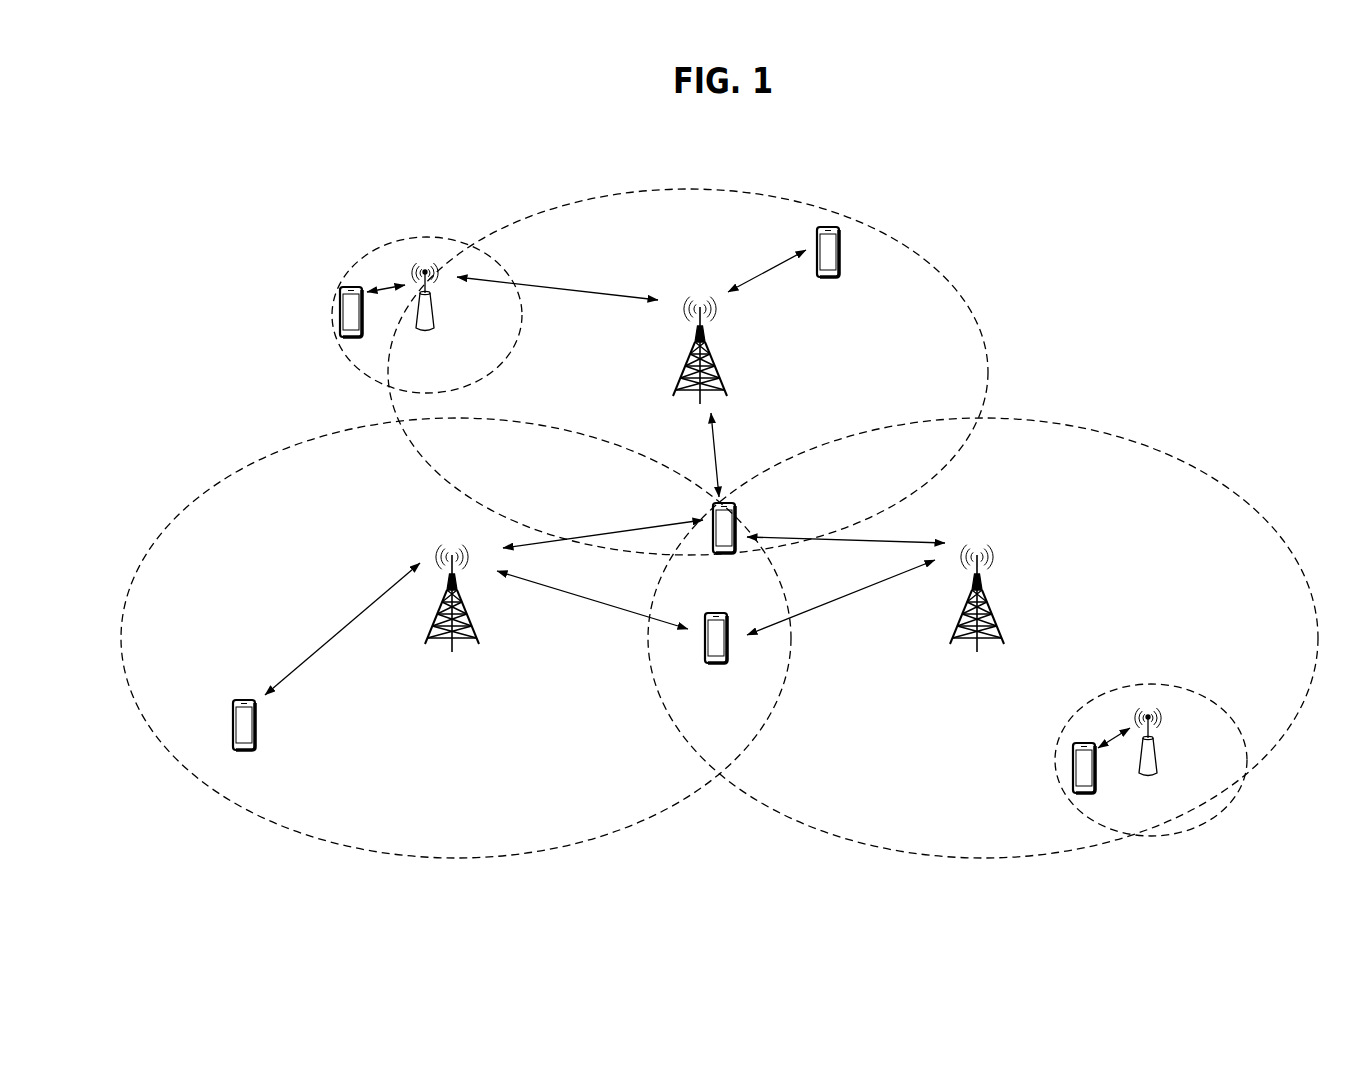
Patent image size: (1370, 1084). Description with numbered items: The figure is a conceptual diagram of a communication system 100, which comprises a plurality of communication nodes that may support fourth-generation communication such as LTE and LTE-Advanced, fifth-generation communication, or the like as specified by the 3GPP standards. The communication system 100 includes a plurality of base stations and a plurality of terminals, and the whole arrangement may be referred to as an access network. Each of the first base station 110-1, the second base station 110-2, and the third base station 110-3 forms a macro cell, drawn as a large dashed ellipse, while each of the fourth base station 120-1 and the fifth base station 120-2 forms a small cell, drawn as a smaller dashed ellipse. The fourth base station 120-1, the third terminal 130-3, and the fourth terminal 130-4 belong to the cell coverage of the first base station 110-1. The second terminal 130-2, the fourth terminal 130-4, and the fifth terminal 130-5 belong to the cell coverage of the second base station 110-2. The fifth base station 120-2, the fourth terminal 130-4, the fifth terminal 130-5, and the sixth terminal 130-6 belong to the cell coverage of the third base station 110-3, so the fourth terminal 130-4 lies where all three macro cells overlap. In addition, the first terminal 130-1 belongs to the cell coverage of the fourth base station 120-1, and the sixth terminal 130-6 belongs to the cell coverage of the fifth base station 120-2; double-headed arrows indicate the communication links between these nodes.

The communication system 100 is at (706, 158).
The first base station 110-1 is at (712, 356).
The second base station 110-2 is at (452, 650).
The third base station 110-3 is at (990, 603).
The fourth base station 120-1 is at (433, 312).
The fifth base station 120-2 is at (1187, 737).
The first terminal 130-1 is at (340, 310).
The second terminal 130-2 is at (256, 724).
The third terminal 130-3 is at (840, 258).
The fourth terminal 130-4 is at (737, 508).
The fifth terminal 130-5 is at (718, 614).
The sixth terminal 130-6 is at (1073, 770).